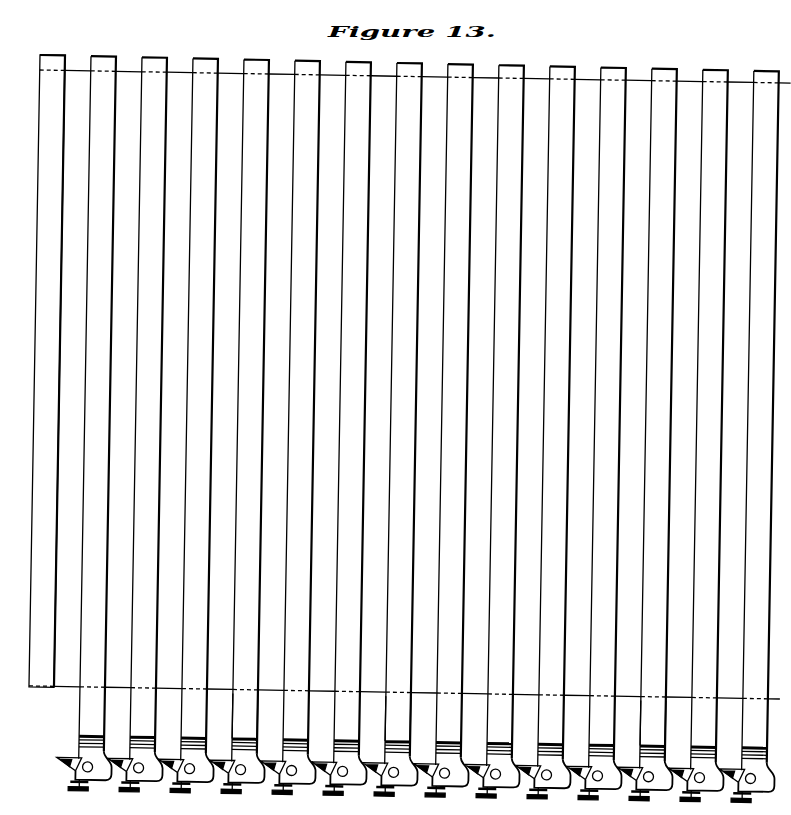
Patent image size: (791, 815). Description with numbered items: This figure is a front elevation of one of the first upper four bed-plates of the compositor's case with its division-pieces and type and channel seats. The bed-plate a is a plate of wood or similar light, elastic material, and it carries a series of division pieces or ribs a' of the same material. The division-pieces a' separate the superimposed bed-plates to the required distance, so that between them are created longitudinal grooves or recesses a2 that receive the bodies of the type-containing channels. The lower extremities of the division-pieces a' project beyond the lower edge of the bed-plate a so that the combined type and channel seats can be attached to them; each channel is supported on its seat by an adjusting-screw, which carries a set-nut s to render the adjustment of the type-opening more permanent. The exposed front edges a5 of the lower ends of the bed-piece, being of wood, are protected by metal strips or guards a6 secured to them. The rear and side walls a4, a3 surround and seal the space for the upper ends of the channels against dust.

The bed-plate a is at (429, 413).
The division-piece a' is at (378, 412).
The longitudinal groove a2 is at (487, 415).
The side wall a3 is at (423, 733).
The rear wall a4 is at (415, 768).
The front edge a5 is at (404, 685).
The guard a6 is at (222, 694).
The set-nut s is at (409, 797).